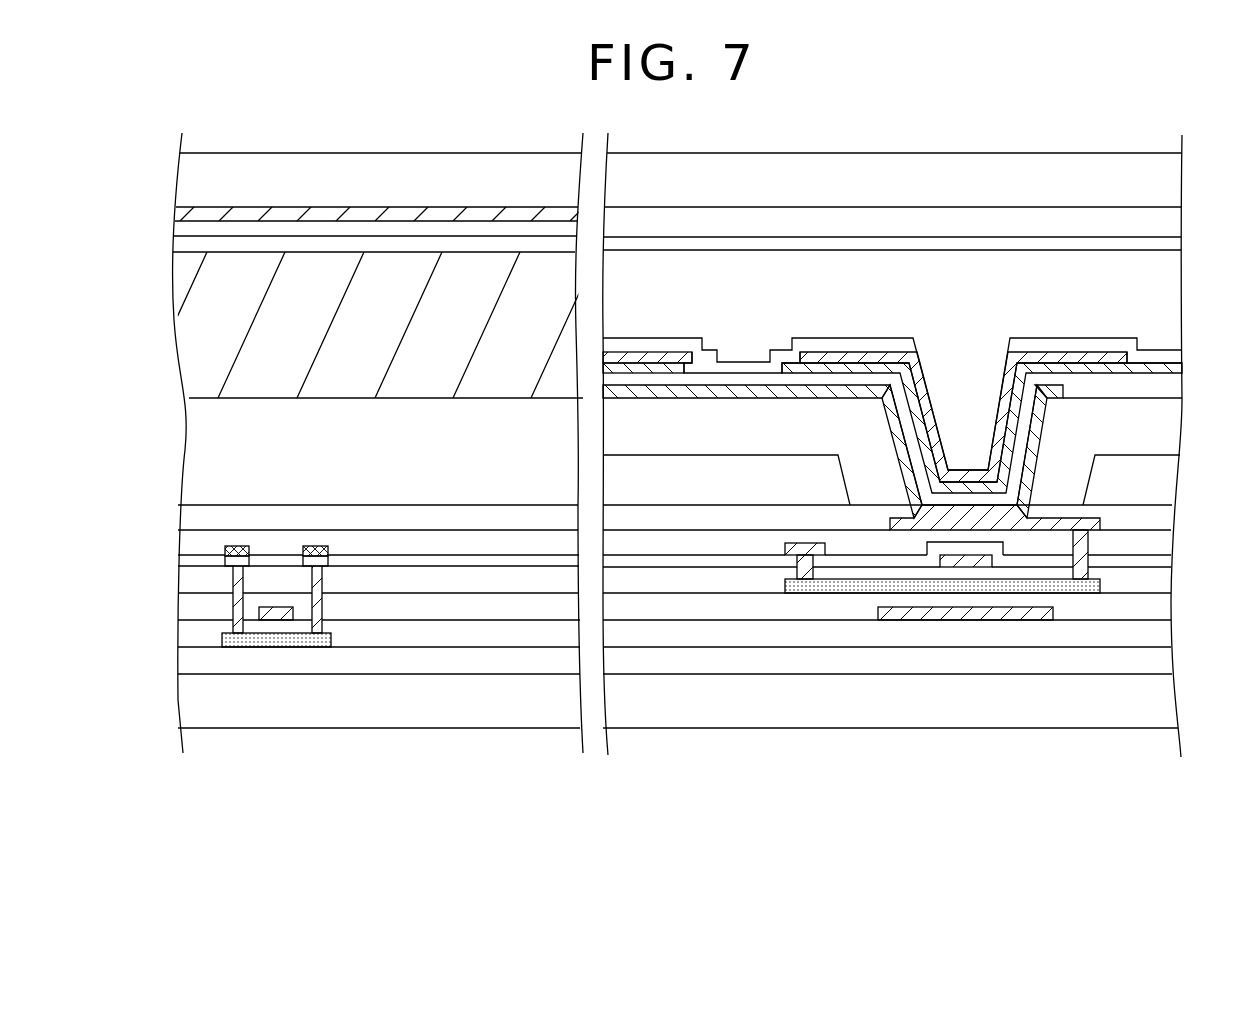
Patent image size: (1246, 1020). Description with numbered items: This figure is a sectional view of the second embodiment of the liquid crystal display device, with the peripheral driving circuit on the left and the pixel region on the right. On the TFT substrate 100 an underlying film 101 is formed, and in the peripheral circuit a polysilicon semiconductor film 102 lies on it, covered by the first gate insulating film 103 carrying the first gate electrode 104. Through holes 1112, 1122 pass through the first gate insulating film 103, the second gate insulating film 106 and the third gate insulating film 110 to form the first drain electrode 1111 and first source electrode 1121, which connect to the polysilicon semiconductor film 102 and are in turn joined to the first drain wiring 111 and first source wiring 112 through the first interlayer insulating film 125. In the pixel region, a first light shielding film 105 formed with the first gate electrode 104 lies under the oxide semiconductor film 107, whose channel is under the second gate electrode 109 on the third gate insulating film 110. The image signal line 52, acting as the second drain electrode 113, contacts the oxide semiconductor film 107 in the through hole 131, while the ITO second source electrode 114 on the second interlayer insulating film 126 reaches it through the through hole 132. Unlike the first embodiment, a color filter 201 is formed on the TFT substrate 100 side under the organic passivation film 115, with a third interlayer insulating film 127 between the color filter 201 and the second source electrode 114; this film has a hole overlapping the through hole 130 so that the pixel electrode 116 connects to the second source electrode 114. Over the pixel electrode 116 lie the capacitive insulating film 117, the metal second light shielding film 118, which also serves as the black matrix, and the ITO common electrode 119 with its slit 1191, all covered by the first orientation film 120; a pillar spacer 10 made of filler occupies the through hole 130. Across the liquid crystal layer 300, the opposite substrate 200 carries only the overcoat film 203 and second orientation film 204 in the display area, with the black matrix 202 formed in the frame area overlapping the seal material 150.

The pillar spacer 10 is at (958, 317).
The image signal line 52 is at (805, 549).
The TFT substrate 100 is at (187, 705).
The underlying film 101 is at (187, 663).
The polysilicon semiconductor film 102 is at (302, 644).
The first gate insulating film 103 is at (187, 633).
The first gate electrode 104 is at (270, 621).
The first light shielding film 105 is at (920, 621).
The second gate insulating film 106 is at (187, 608).
The oxide semiconductor film 107 is at (1015, 594).
The second gate electrode 109 is at (973, 568).
The third gate insulating film 110 is at (187, 583).
The first drain wiring 111 is at (238, 546).
The first source wiring 112 is at (320, 546).
The second drain electrode 113 is at (805, 538).
The second source electrode 114 is at (1066, 517).
The organic passivation film 115 is at (195, 438).
The pixel electrode 116 is at (738, 392).
The capacitive insulating film 117 is at (689, 380).
The second light shielding film 118 is at (872, 366).
The common electrode 119 is at (828, 351).
The first orientation film 120 is at (670, 337).
The first interlayer insulating film 125 is at (187, 563).
The second interlayer insulating film 126 is at (180, 545).
The third interlayer insulating film 127 is at (188, 517).
The through hole 130 is at (889, 430).
The through hole 131 is at (783, 577).
The through hole 132 is at (1089, 540).
The seal material 150 is at (195, 303).
The opposite substrate 200 is at (187, 180).
The color filter 201 is at (653, 488).
The black matrix 202 is at (187, 215).
The overcoat film 203 is at (187, 230).
The second orientation film 204 is at (187, 245).
The liquid crystal layer 300 is at (1155, 300).
The first drain electrode 1111 is at (249, 561).
The through hole 1112 is at (230, 582).
The first source electrode 1121 is at (328, 560).
The through hole 1122 is at (325, 580).
The slit 1191 is at (739, 356).